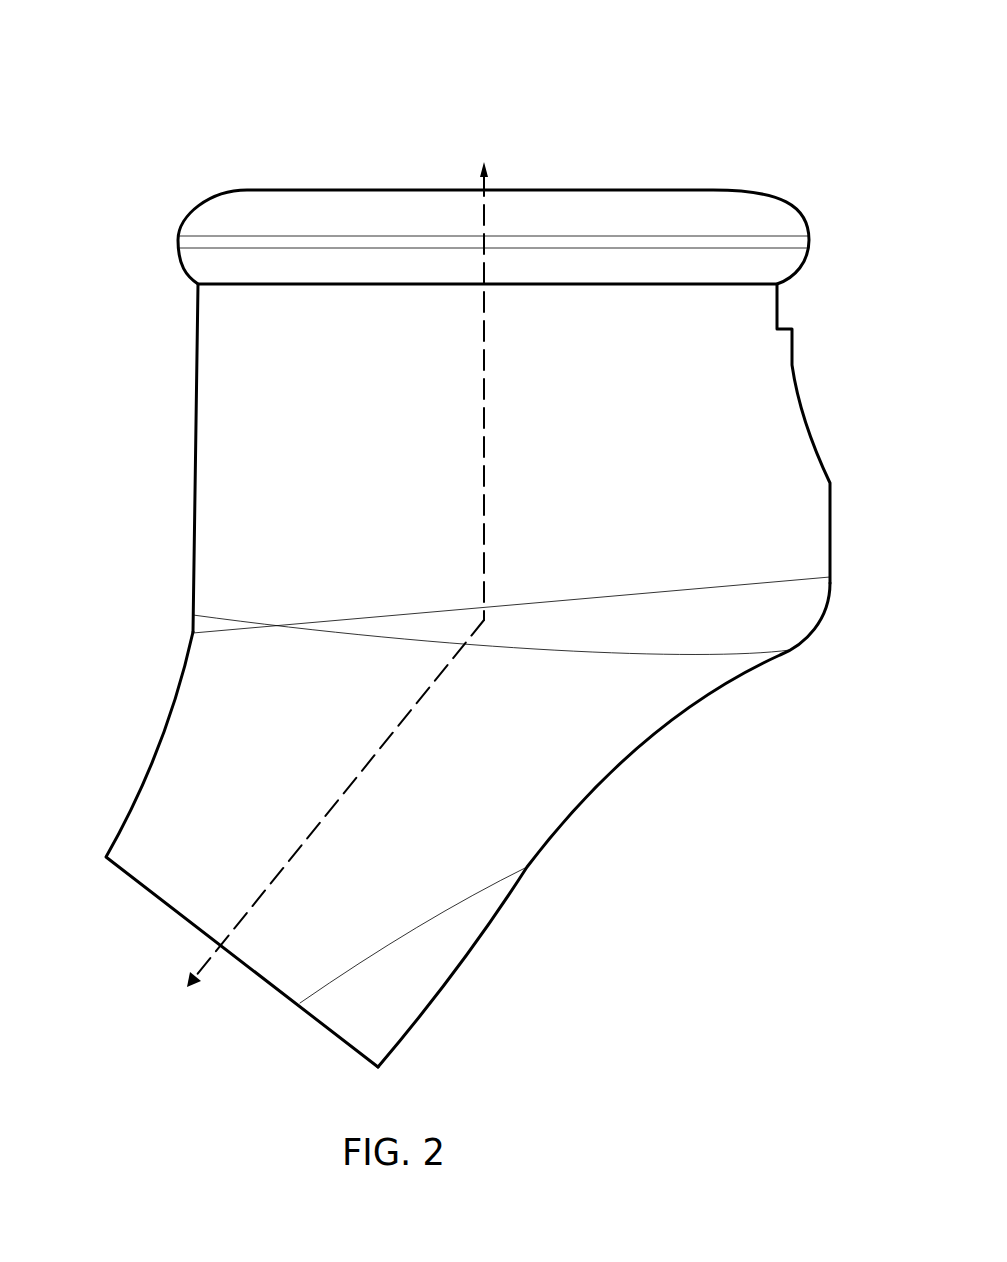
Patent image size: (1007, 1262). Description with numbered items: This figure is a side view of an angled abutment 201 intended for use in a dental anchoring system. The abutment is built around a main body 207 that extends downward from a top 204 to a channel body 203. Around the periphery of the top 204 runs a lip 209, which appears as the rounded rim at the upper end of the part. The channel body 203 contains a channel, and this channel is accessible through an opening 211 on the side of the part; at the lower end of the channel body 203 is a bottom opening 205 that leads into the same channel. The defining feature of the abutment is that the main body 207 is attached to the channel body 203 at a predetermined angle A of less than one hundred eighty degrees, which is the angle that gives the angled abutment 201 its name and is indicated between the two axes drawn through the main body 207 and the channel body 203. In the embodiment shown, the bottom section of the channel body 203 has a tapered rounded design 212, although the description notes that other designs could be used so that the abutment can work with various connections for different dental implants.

The angled abutment 201 is at (748, 70).
The channel body 203 is at (158, 747).
The top 204 is at (455, 214).
The bottom opening 205 is at (170, 942).
The main body 207 is at (192, 498).
The lip 209 is at (178, 240).
The opening 211 is at (805, 406).
The tapered rounded design 212 is at (450, 970).
The predetermined angle A is at (293, 853).